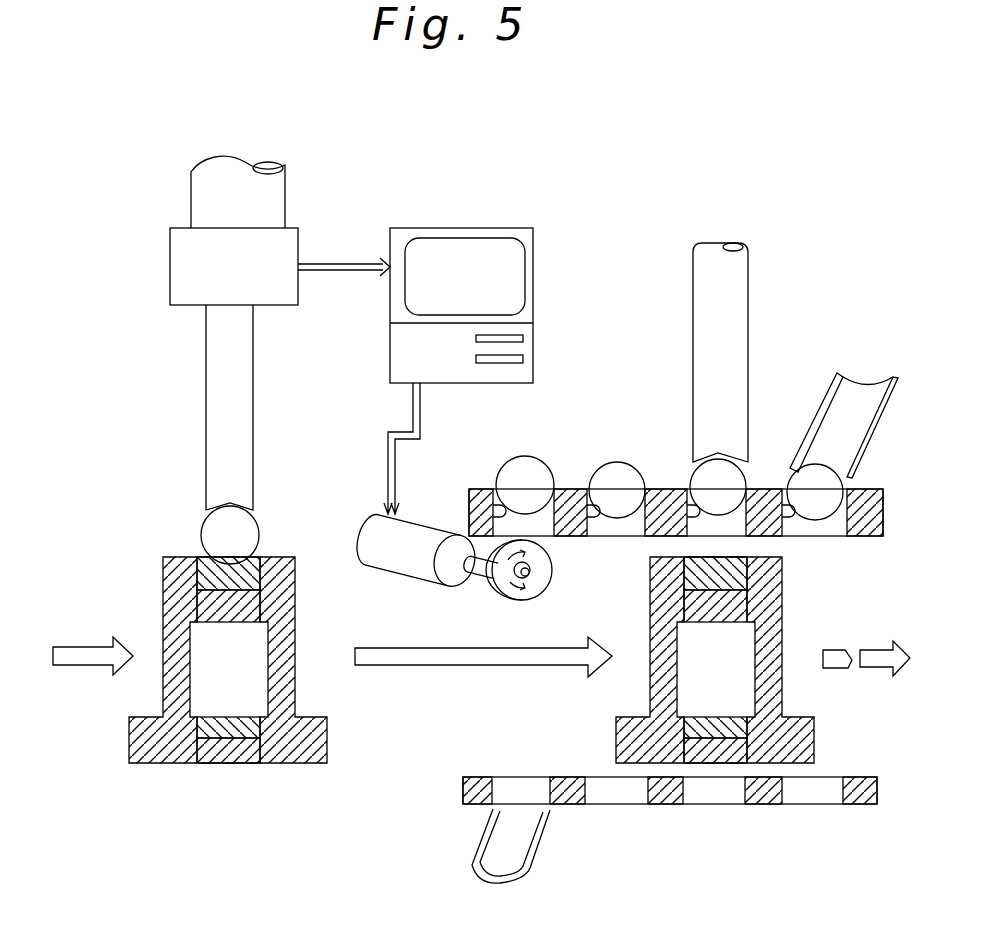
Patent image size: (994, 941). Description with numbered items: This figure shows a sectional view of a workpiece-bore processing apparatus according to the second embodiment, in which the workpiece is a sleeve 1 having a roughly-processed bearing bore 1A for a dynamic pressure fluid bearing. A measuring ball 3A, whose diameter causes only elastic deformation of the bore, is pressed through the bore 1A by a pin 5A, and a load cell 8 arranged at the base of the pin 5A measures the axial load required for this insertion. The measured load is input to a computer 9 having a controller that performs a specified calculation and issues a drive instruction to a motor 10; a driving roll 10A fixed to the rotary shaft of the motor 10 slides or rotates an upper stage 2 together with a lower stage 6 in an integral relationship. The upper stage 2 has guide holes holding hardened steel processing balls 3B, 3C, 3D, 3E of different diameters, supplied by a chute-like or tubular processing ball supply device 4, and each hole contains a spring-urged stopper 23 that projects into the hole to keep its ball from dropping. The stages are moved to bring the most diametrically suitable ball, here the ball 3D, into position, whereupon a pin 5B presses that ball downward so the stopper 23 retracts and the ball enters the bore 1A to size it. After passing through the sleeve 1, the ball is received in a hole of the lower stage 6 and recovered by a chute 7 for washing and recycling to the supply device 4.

The sleeve 1 is at (285, 577).
The bearing bore 1A is at (262, 605).
The upper stage 2 is at (866, 530).
The measuring ball 3A is at (205, 525).
The processing ball 3B is at (510, 470).
The processing ball 3C is at (605, 472).
The processing ball 3D is at (688, 470).
The processing ball 3E is at (812, 468).
The processing ball supply device 4 is at (893, 377).
The pin 5A is at (206, 392).
The pin 5B is at (740, 285).
The lower stage 6 is at (862, 777).
The chute 7 is at (545, 842).
The load cell 8 is at (298, 228).
The computer 9 is at (533, 228).
The motor 10 is at (377, 517).
The driving roll 10A is at (522, 593).
The stopper 23 is at (468, 510).